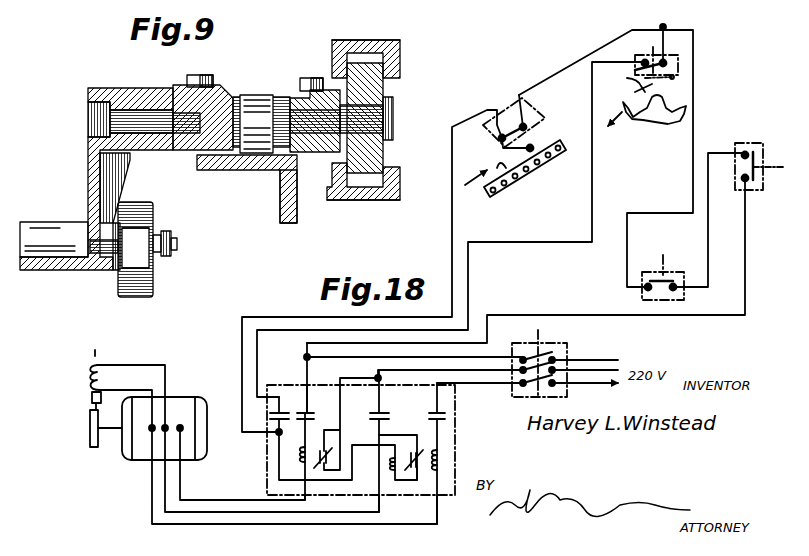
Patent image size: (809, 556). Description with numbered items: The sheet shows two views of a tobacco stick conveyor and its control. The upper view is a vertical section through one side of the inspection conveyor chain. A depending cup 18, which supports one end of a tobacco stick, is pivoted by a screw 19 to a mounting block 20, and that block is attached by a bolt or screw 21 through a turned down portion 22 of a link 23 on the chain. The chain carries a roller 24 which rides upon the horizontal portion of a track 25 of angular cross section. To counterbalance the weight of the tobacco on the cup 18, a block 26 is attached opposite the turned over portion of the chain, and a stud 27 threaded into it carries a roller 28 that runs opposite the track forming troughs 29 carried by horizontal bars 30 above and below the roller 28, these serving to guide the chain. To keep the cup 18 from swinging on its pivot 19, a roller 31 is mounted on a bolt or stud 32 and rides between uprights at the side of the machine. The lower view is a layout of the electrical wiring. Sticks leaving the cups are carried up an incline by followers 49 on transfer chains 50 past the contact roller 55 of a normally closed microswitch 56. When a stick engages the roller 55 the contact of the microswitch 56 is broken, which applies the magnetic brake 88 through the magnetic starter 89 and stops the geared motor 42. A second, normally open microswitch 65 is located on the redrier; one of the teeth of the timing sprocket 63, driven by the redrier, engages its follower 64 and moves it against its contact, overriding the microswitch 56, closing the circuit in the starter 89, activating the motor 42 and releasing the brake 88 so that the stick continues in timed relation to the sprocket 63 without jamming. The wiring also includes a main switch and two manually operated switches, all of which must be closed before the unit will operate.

In FIG. 9, the cup 18 is at (46, 270).
In FIG. 9, the screw 19 is at (118, 110).
In FIG. 9, the mounting block 20 is at (183, 150).
In FIG. 9, the bolt or screw 21 is at (200, 75).
In FIG. 9, the turned down portion 22 is at (245, 76).
In FIG. 9, the link 23 is at (225, 170).
In FIG. 9, the roller 24 is at (258, 155).
In FIG. 9, the track 25 is at (297, 208).
In FIG. 9, the block 26 is at (314, 148).
In FIG. 9, the stud 27 is at (395, 110).
In FIG. 9, the roller 28 is at (380, 90).
In FIG. 9, the trough 29 is at (400, 56).
In FIG. 9, the horizontal bar 30 is at (372, 40).
In FIG. 9, the roller 31 is at (135, 297).
In FIG. 9, the bolt or stud 32 is at (178, 246).
In FIG. 18, the motor 42 is at (210, 380).
In FIG. 18, the follower 49 is at (500, 163).
In FIG. 18, the transfer chain 50 is at (538, 162).
In FIG. 18, the contact roller 55 is at (530, 148).
In FIG. 18, the microswitch 56 is at (516, 115).
In FIG. 18, the timing sprocket 63 is at (660, 120).
In FIG. 18, the follower 64 is at (627, 78).
In FIG. 18, the microswitch 65 is at (655, 52).
In FIG. 18, the magnetic brake 88 is at (80, 401).
In FIG. 18, the magnetic starter 89 is at (462, 446).